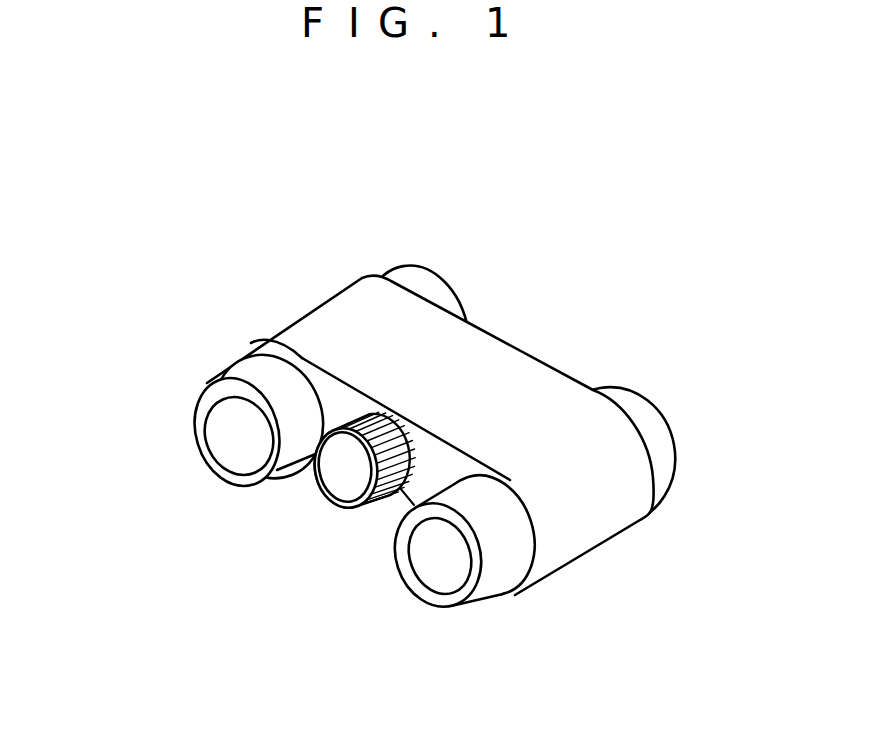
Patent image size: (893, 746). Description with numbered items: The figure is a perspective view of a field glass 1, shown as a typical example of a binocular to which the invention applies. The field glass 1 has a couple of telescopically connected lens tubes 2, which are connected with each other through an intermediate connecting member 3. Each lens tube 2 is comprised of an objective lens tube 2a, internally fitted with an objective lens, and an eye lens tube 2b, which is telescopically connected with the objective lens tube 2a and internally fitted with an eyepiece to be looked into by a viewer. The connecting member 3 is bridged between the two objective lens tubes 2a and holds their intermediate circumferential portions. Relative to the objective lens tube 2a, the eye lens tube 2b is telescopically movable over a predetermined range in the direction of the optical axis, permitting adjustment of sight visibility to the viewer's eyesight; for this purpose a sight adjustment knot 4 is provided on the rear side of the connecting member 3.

The field glass 1 is at (423, 375).
The lens tube 2 is at (207, 380).
The objective lens tube 2a is at (415, 280).
The eye lens tube 2b is at (247, 368).
The connecting member 3 is at (497, 357).
The sight adjustment knot 4 is at (348, 483).